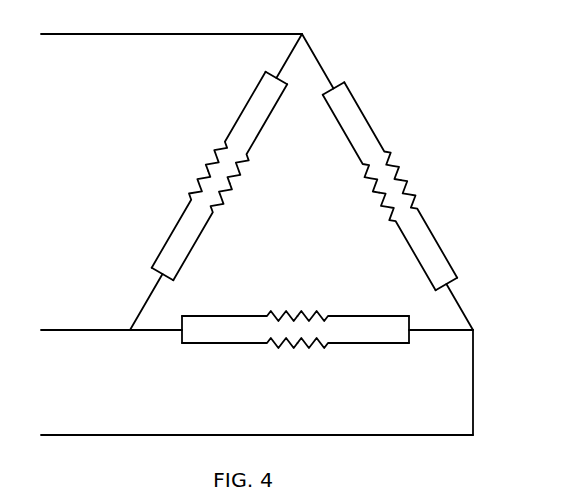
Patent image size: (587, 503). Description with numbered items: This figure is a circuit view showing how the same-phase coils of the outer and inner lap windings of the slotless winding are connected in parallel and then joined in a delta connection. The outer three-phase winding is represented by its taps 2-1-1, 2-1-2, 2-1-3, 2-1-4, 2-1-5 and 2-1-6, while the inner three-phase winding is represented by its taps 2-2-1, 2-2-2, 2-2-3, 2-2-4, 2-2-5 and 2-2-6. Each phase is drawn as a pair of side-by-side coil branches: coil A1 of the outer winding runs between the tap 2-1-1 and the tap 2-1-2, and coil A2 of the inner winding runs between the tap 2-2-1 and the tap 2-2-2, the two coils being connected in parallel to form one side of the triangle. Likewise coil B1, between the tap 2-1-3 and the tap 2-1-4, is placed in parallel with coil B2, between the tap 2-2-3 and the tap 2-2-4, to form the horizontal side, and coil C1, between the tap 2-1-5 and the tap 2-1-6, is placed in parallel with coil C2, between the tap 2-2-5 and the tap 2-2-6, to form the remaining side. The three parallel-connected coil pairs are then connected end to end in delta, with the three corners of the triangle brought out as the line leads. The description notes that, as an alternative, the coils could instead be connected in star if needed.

The tap of the outer three-phase winding 2-1-1 is at (228, 121).
The tap of the outer three-phase winding 2-1-2 is at (171, 219).
The tap of the outer three-phase winding 2-1-3 is at (240, 354).
The tap of the outer three-phase winding 2-1-4 is at (354, 354).
The tap of the outer three-phase winding 2-1-5 is at (437, 229).
The tap of the outer three-phase winding 2-1-6 is at (372, 131).
The tap of the inner three-phase winding 2-2-1 is at (263, 133).
The tap of the inner three-phase winding 2-2-2 is at (206, 231).
The tap of the inner three-phase winding 2-2-3 is at (240, 305).
The tap of the inner three-phase winding 2-2-4 is at (354, 306).
The tap of the inner three-phase winding 2-2-5 is at (397, 242).
The tap of the inner three-phase winding 2-2-6 is at (344, 144).